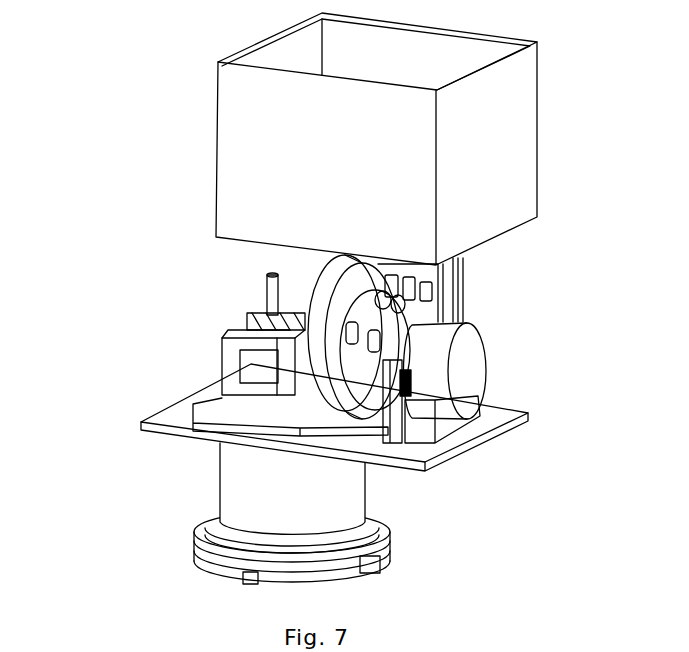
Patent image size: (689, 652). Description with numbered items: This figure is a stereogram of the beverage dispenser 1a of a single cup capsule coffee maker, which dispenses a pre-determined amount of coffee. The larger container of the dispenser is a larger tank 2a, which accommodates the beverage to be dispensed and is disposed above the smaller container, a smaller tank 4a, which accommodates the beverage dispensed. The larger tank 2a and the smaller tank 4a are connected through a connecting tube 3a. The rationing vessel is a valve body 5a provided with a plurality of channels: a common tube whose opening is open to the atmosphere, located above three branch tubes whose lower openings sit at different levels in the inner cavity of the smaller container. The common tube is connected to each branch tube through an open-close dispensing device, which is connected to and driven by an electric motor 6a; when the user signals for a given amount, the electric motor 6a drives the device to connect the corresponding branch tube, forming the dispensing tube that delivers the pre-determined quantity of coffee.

The beverage dispenser 1a is at (197, 475).
The larger tank 2a is at (253, 151).
The connecting tube 3a is at (318, 259).
The smaller tank 4a is at (328, 492).
The valve body 5a is at (268, 298).
The electric motor 6a is at (437, 338).